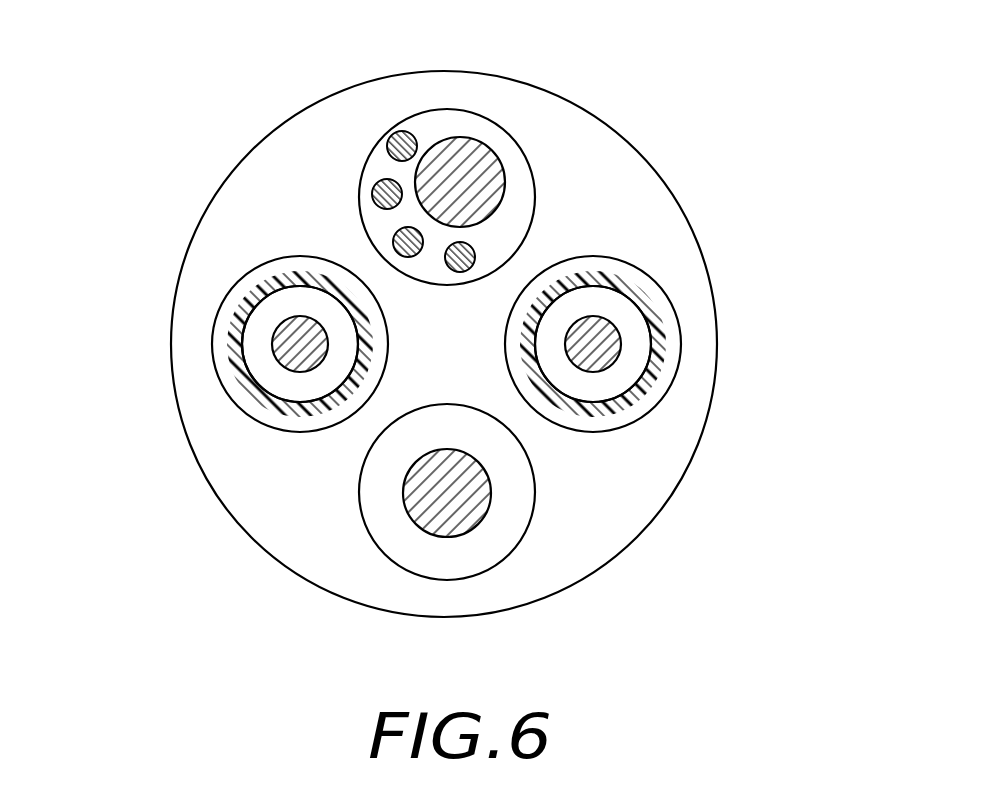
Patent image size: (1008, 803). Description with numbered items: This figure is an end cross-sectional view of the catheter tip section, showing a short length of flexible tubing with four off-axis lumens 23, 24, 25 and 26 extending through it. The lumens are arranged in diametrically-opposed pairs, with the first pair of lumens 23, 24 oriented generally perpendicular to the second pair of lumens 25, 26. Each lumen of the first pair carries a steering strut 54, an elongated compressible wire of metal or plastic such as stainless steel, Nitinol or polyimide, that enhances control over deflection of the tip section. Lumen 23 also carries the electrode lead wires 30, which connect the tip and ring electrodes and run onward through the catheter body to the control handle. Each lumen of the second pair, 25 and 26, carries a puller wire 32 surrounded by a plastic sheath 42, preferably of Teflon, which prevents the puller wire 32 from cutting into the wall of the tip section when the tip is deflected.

The off-axis lumen 23 is at (503, 232).
The off-axis lumen 24 is at (503, 532).
The off-axis lumen 25 is at (630, 372).
The off-axis lumen 26 is at (270, 382).
The electrode lead wire 30 is at (372, 196).
The puller wire 32 is at (290, 345).
The plastic sheath 42 is at (250, 275).
The steering strut 54 is at (485, 178).